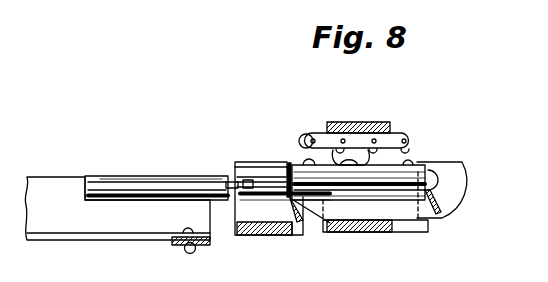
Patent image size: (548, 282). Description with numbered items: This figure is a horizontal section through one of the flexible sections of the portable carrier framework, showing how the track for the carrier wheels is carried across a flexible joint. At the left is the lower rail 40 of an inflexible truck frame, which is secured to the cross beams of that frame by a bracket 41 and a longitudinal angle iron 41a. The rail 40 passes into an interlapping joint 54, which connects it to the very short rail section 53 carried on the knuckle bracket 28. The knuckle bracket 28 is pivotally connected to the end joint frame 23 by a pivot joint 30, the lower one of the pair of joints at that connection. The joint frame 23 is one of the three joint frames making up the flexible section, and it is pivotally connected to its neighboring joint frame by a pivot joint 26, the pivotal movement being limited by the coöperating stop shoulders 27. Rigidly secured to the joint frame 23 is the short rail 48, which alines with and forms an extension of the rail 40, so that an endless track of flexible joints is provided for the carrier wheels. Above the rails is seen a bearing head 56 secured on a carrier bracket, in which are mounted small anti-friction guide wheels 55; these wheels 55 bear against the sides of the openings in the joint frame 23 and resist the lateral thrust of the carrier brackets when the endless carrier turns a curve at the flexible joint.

The rail 40 is at (131, 184).
The longitudinal angle iron 41a is at (100, 219).
The bracket 41 is at (177, 259).
The interlapping joint 54 is at (243, 163).
The short rail section 53 is at (262, 182).
The anti-friction guide wheel 55 is at (330, 164).
The joint frame 23 is at (364, 124).
The bearing head 56 is at (402, 134).
The short rail 48 is at (402, 183).
The pivot joint 26 is at (437, 173).
The stop shoulder 27 is at (300, 212).
The knuckle bracket 28 is at (258, 238).
The pivot joint 30 is at (290, 200).